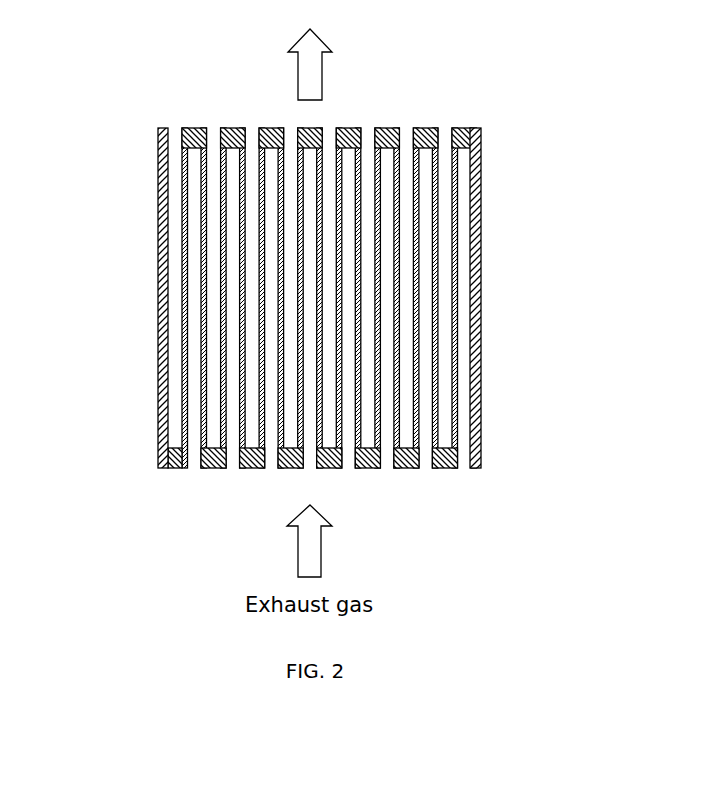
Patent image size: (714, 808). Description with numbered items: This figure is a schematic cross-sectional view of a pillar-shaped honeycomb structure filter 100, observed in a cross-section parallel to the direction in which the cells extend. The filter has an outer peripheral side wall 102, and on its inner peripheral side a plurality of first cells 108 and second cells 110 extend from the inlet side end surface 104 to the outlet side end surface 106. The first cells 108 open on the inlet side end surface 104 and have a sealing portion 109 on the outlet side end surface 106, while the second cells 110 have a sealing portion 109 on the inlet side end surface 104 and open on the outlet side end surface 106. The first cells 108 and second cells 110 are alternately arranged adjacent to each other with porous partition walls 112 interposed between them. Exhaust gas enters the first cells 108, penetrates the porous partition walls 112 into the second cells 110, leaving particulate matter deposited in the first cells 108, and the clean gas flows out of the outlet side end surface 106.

The pillar-shaped honeycomb structure filter 100 is at (319, 291).
The outer peripheral side wall 102 is at (161, 165).
The inlet side end surface 104 is at (162, 469).
The outlet side end surface 106 is at (476, 128).
The first cell 108 is at (387, 469).
The sealing portion 109 is at (426, 128).
The second cell 110 is at (216, 128).
The porous partition wall 112 is at (184, 258).